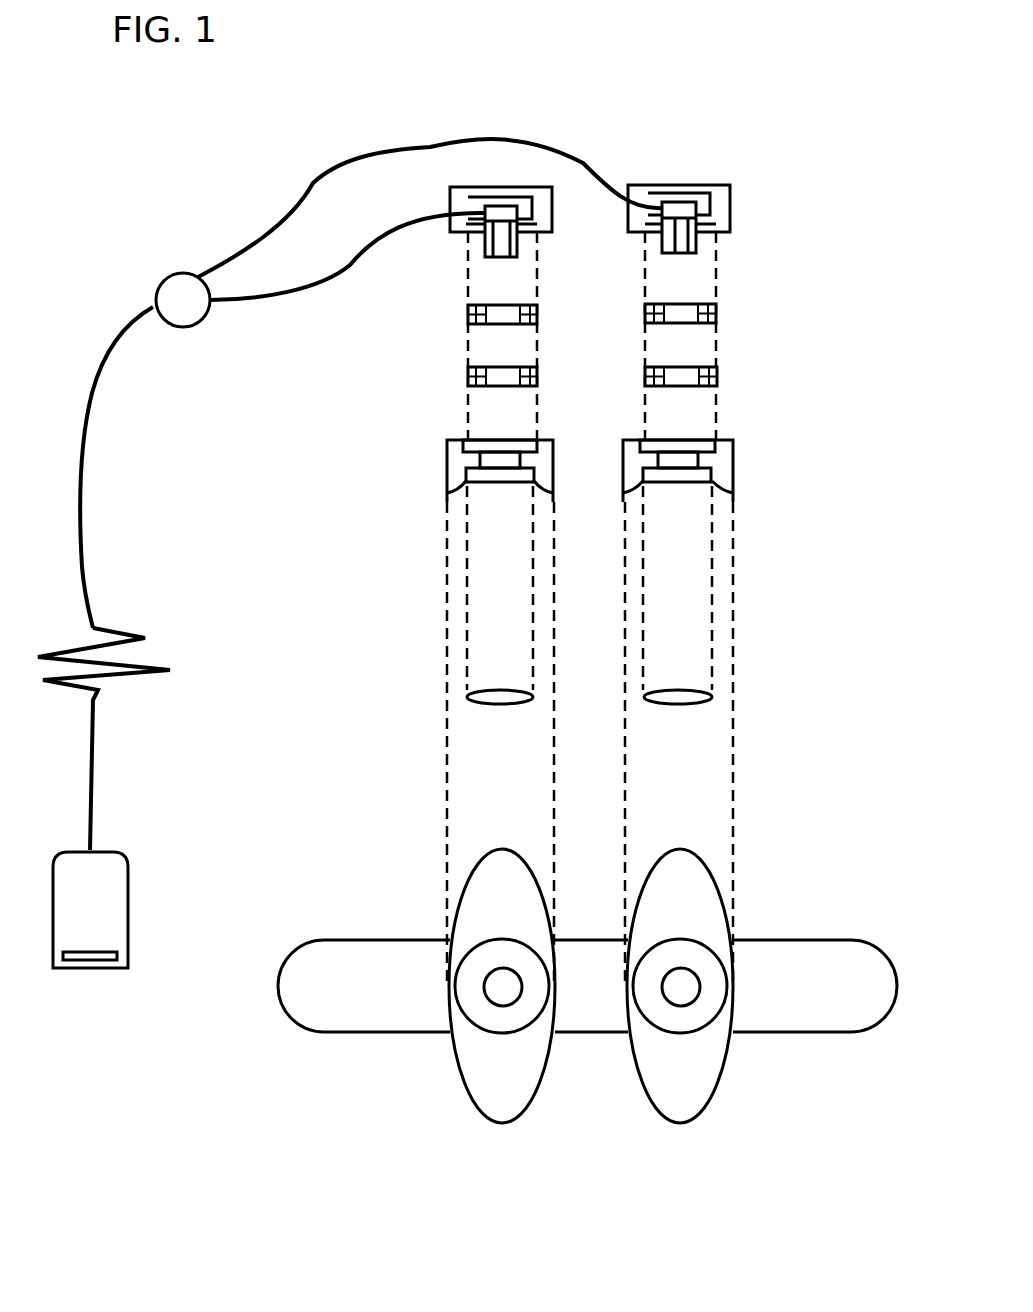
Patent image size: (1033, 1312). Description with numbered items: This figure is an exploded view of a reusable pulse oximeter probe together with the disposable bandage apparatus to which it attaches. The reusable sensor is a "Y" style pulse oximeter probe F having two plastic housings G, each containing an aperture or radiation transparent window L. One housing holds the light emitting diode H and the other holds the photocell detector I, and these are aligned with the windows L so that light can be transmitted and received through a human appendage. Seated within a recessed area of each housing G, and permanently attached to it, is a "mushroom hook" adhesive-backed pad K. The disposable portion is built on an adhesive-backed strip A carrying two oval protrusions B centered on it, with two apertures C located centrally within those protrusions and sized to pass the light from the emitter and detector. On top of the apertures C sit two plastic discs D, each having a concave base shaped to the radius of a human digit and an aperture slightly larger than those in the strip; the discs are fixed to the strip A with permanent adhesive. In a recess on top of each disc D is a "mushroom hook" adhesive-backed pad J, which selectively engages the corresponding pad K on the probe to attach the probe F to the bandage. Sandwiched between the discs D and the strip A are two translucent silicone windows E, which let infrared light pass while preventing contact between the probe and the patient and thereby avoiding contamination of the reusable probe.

The adhesive-backed strip A is at (816, 1005).
The oval protrusions B is at (508, 890).
The apertures C is at (680, 990).
The plastic discs D is at (586, 609).
The translucent silicone windows E is at (513, 687).
The pulse oximeter probe F is at (350, 553).
The plastic housings G is at (590, 190).
The light emitting diode H is at (502, 206).
The photocell detector I is at (685, 200).
The mushroom hook pads J is at (585, 384).
The mushroom hook adhesive-backed pad K is at (608, 316).
The apertures or radiation transparent windows L is at (673, 240).